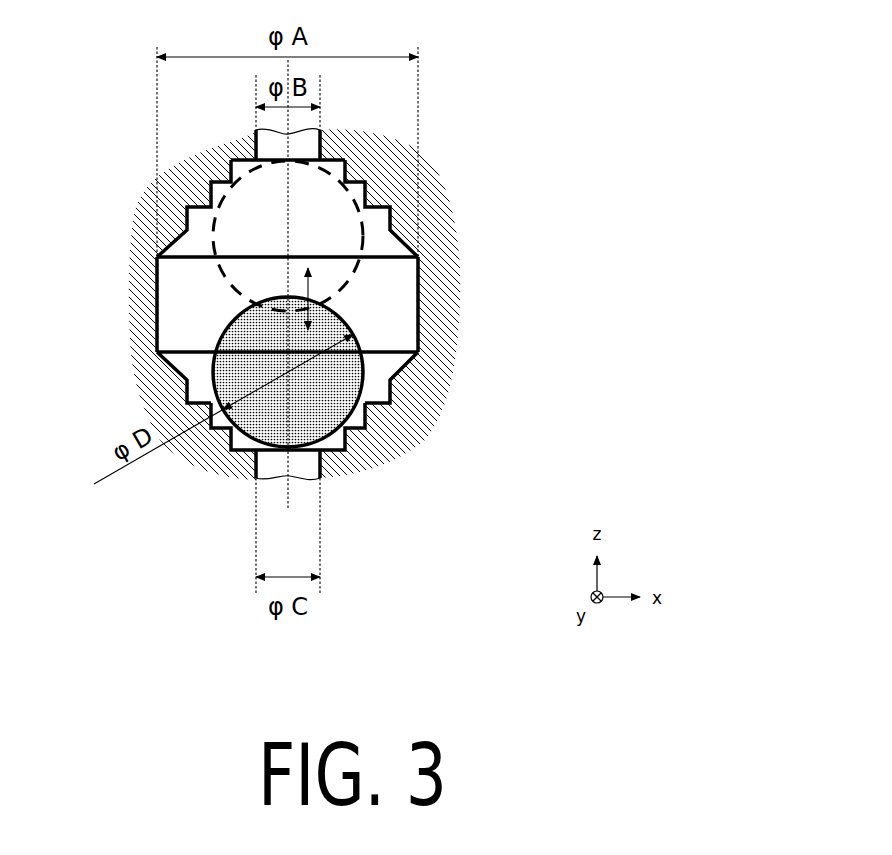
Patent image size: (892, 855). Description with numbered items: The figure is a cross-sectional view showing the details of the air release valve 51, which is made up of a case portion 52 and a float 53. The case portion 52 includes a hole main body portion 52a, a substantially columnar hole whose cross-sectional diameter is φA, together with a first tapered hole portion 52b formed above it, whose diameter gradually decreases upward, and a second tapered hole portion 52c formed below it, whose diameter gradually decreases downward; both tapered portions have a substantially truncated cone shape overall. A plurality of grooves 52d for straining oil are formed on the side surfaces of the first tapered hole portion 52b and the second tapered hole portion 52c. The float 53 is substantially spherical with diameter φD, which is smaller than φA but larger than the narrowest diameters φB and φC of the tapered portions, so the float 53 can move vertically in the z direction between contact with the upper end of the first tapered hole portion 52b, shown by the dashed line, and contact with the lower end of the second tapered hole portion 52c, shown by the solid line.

The air release valve 51 is at (578, 125).
The case portion 52 is at (401, 304).
The hole main body portion 52a is at (398, 302).
The first tapered hole portion 52b is at (398, 234).
The second tapered hole portion 52c is at (398, 356).
The groove 52d is at (388, 416).
The float 53 is at (272, 350).